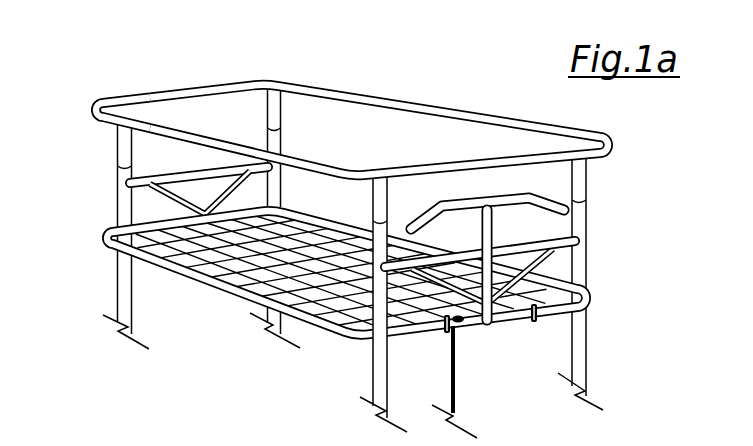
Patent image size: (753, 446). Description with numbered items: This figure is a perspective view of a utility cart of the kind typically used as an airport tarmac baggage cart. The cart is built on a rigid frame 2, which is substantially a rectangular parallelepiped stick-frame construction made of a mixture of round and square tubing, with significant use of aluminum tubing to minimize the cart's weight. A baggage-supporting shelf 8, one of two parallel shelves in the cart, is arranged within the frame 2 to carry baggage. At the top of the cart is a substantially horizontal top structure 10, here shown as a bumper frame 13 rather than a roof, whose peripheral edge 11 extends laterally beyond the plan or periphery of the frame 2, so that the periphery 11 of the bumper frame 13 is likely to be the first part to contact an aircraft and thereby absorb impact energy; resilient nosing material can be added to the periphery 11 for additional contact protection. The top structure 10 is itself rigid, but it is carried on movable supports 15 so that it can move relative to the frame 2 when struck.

The rigid frame 2 is at (124, 274).
The baggage-supporting shelf 8 is at (192, 250).
The top structure 10 is at (379, 223).
The peripheral edge 11 is at (162, 94).
The bumper frame 13 is at (313, 160).
The movable support 15 is at (612, 157).